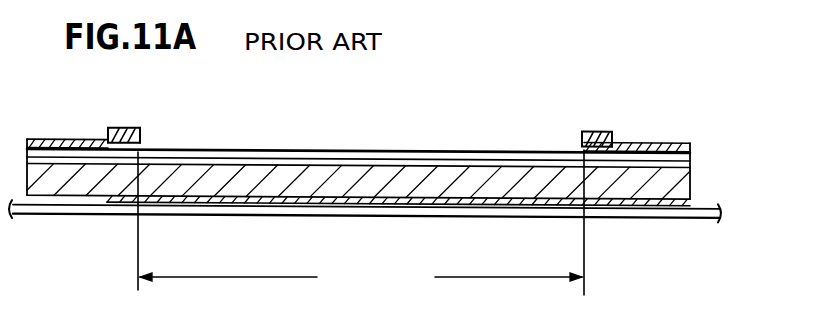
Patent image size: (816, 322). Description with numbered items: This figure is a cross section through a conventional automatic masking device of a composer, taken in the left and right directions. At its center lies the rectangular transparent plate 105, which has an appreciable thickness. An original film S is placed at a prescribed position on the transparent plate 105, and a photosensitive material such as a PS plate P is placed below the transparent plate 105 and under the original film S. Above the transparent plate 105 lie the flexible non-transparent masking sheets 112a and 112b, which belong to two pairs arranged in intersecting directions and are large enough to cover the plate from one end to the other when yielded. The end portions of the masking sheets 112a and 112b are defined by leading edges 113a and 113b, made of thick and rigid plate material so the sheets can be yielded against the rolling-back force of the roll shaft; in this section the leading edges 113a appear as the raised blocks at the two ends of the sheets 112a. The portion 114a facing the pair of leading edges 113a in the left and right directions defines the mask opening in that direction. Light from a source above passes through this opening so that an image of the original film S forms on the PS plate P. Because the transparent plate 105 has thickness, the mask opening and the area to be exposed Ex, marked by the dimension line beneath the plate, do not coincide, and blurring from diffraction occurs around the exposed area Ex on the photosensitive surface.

The transparent plate 105 is at (522, 177).
The masking sheet 112a is at (45, 138).
The masking sheet 112b is at (450, 163).
The leading edge 113a is at (127, 127).
The leading edge 113b is at (361, 155).
The portion facing leading edges 114a is at (140, 135).
The original film S is at (277, 202).
The PS plate P is at (704, 217).
The area to be exposed Ex is at (361, 222).